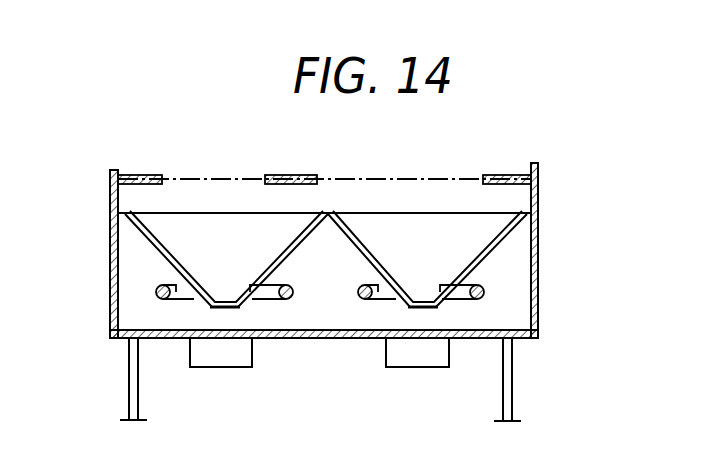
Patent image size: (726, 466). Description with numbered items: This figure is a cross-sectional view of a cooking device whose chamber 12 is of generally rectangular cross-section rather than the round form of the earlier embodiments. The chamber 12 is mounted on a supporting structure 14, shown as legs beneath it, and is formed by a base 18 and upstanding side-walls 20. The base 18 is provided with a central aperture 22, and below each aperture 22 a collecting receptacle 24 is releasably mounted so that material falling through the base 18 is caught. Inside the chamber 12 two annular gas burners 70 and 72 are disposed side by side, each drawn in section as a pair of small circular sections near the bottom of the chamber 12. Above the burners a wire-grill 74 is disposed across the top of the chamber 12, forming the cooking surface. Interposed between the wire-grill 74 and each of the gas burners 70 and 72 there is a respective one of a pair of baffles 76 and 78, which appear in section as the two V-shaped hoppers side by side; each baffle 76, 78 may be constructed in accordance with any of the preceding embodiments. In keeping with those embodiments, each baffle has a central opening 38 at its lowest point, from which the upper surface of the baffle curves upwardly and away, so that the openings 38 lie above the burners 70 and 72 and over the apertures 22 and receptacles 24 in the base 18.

The cooking vessel or chamber 12 is at (540, 190).
The supporting structure 14 is at (513, 378).
The base 18 is at (309, 338).
The side-walls 20 is at (540, 265).
The central aperture 22 is at (217, 338).
The collecting receptacle 24 is at (187, 352).
The central opening 38 is at (220, 304).
The annular gas burner 70 is at (158, 297).
The annular gas burner 72 is at (365, 299).
The wire-grill 74 is at (160, 178).
The baffle 76 is at (137, 232).
The baffle 78 is at (357, 240).